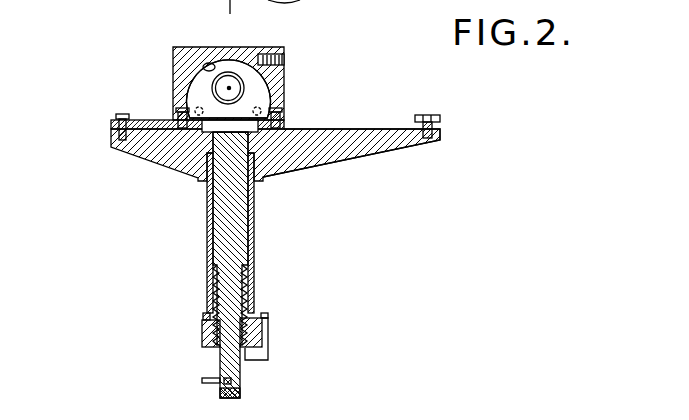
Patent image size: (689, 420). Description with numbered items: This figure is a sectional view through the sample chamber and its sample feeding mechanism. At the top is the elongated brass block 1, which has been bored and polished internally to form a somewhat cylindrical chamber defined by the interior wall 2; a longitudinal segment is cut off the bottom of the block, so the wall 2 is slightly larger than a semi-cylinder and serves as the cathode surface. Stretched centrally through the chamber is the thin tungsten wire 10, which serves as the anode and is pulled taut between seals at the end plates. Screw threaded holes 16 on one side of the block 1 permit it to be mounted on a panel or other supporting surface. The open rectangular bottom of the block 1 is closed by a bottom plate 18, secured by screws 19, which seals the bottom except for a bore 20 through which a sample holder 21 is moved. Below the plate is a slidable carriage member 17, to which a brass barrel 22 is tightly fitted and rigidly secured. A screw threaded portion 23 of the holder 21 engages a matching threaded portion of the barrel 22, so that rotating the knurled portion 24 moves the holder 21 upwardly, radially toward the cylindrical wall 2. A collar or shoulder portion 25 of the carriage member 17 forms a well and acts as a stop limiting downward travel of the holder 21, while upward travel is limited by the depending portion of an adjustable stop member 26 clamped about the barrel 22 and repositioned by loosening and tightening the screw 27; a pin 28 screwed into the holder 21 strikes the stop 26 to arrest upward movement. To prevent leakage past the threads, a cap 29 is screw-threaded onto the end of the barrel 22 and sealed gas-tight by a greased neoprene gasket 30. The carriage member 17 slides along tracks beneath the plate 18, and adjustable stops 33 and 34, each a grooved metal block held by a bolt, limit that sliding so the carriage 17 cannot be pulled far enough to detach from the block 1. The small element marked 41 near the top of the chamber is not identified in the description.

The block 1 is at (182, 58).
The interior wall 2 is at (217, 61).
The wire 10 is at (229, 88).
The screw threaded holes 16 is at (284, 60).
The carriage member 17 is at (368, 114).
The bottom plate 18 is at (153, 120).
The screws 19 is at (282, 115).
The bore 20 is at (190, 152).
The sample holder 21 is at (240, 216).
The barrel 22 is at (248, 276).
The screw threaded portion 23 is at (213, 283).
The knurled portion 24 is at (242, 393).
The collar or shoulder portion 25 is at (222, 138).
The adjustable stop member 26 is at (258, 360).
The screw 27 is at (268, 315).
The pin 28 is at (202, 381).
The cap 29 is at (203, 331).
The gasket 30 is at (221, 336).
The adjustable stop 33 is at (114, 118).
The adjustable stop 34 is at (438, 115).
The screw 41 is at (203, 63).